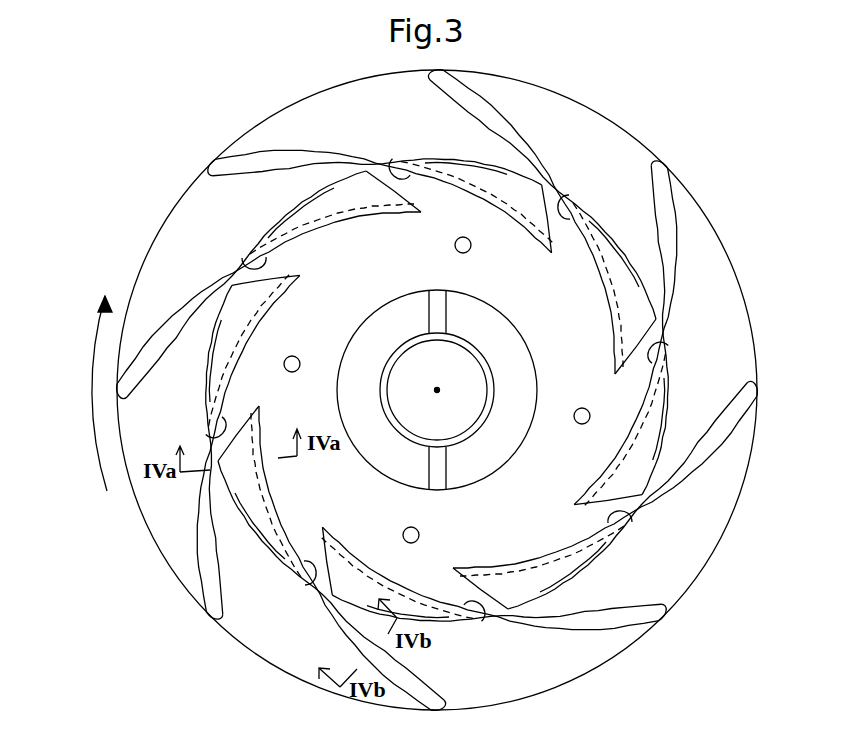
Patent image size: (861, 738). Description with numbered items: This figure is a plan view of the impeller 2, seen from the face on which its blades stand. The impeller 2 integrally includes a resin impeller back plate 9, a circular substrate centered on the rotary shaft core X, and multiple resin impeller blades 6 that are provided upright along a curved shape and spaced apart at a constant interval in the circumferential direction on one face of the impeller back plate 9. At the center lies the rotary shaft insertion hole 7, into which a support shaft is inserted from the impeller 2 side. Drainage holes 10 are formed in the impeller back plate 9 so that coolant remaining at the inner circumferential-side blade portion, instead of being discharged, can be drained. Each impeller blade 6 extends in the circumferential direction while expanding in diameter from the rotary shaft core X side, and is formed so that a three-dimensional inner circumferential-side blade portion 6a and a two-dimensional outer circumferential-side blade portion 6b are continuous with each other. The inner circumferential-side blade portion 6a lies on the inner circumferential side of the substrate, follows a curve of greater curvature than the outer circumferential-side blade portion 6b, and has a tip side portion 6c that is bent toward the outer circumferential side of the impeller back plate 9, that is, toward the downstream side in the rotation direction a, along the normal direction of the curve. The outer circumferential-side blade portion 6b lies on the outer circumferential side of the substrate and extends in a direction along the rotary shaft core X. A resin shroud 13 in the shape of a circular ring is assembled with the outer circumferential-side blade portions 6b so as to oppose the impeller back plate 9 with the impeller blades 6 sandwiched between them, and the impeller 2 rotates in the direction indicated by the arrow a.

The impeller 2 is at (668, 125).
The impeller blade 6 is at (483, 398).
The inner circumferential-side blade portion 6a is at (507, 218).
The outer circumferential-side blade portion 6b is at (255, 160).
The tip side portion 6c is at (548, 578).
The rotary shaft insertion hole 7 is at (463, 403).
The impeller back plate 9 is at (735, 486).
The drainage hole 10 is at (455, 246).
The shroud 13 is at (622, 525).
The rotary shaft core X is at (437, 390).
The rotation direction a is at (93, 388).